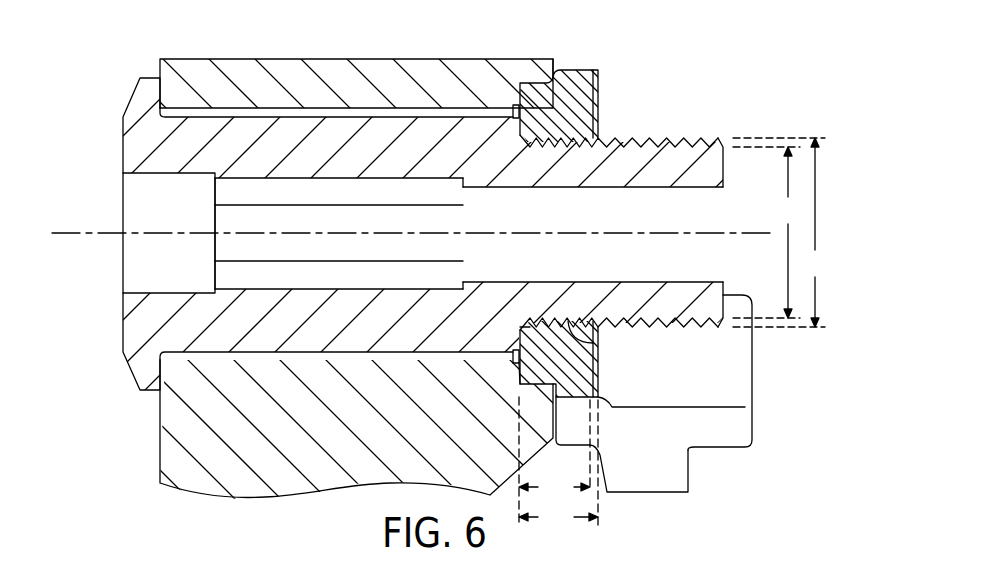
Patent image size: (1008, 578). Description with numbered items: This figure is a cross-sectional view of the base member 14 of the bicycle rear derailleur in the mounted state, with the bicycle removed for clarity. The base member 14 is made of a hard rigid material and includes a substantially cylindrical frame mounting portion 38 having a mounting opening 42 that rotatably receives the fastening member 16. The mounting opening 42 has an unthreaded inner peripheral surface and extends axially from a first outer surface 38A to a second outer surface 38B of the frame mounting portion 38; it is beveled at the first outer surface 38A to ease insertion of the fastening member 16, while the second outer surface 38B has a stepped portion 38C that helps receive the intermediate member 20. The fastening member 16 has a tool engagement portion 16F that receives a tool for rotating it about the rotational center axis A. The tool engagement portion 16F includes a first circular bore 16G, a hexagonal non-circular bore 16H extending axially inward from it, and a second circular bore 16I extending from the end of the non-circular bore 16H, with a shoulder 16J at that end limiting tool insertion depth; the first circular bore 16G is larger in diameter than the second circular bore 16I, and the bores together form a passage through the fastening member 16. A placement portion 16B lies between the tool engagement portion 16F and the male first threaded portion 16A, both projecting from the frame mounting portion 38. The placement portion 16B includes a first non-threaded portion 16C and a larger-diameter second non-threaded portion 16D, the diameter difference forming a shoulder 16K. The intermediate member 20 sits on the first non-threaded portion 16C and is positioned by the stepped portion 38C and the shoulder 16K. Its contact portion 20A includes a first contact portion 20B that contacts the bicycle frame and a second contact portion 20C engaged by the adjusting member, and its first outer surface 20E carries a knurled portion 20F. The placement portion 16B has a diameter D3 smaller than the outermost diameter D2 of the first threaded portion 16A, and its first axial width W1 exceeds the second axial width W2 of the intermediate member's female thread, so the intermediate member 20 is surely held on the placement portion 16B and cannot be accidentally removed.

The base member 14 is at (457, 52).
The fastening member 16 is at (123, 147).
The first threaded portion 16A is at (682, 138).
The placement portion 16B is at (536, 331).
The first non-threaded portion 16C is at (593, 343).
The second non-threaded portion 16D is at (273, 108).
The tool engagement portion 16F is at (118, 199).
The first circular bore 16G is at (147, 265).
The non-circular bore 16H is at (305, 275).
The second circular bore 16I is at (683, 262).
The shoulder 16J is at (463, 282).
The shoulder 16K is at (528, 137).
The intermediate member 20 is at (596, 64).
The contact portion 20A is at (727, 452).
The first contact portion 20B is at (572, 147).
The second contact portion 20C is at (656, 492).
The first outer surface 20E is at (599, 91).
The knurled portion 20F is at (600, 358).
The frame mounting portion 38 is at (231, 59).
The first outer surface 38A is at (160, 437).
The second outer surface 38B is at (555, 75).
The stepped portion 38C is at (520, 377).
The mounting opening 42 is at (367, 121).
The rotational center axis A is at (64, 238).
The outermost diameter of the first threaded portion D2 is at (780, 232).
The diameter of the placement portion D3 is at (767, 232).
The first axial width W1 is at (558, 464).
The second axial width W2 is at (554, 461).